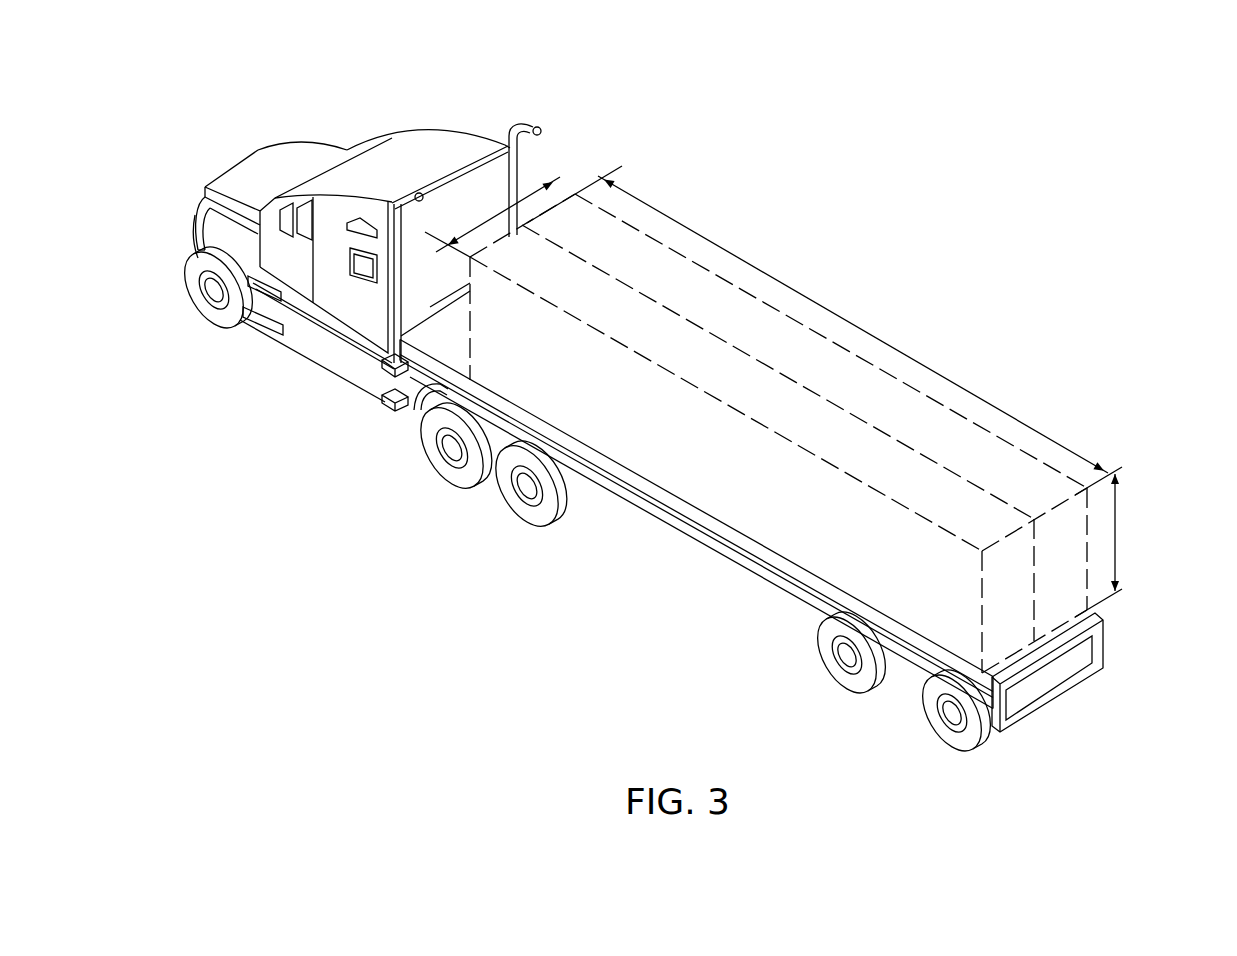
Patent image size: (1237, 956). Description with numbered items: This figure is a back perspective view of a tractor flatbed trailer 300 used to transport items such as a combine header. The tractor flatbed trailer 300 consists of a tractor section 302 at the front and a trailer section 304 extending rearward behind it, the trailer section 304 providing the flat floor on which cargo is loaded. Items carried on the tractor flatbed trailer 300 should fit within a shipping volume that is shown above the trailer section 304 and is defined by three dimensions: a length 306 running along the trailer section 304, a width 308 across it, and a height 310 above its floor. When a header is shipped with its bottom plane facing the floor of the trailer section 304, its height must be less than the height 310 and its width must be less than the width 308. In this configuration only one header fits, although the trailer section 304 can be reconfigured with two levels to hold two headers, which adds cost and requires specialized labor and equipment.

The tractor flatbed trailer 300 is at (695, 408).
The tractor section 302 is at (420, 139).
The trailer section 304 is at (669, 520).
The length 306 is at (878, 335).
The width 308 is at (502, 213).
The height 310 is at (1118, 531).